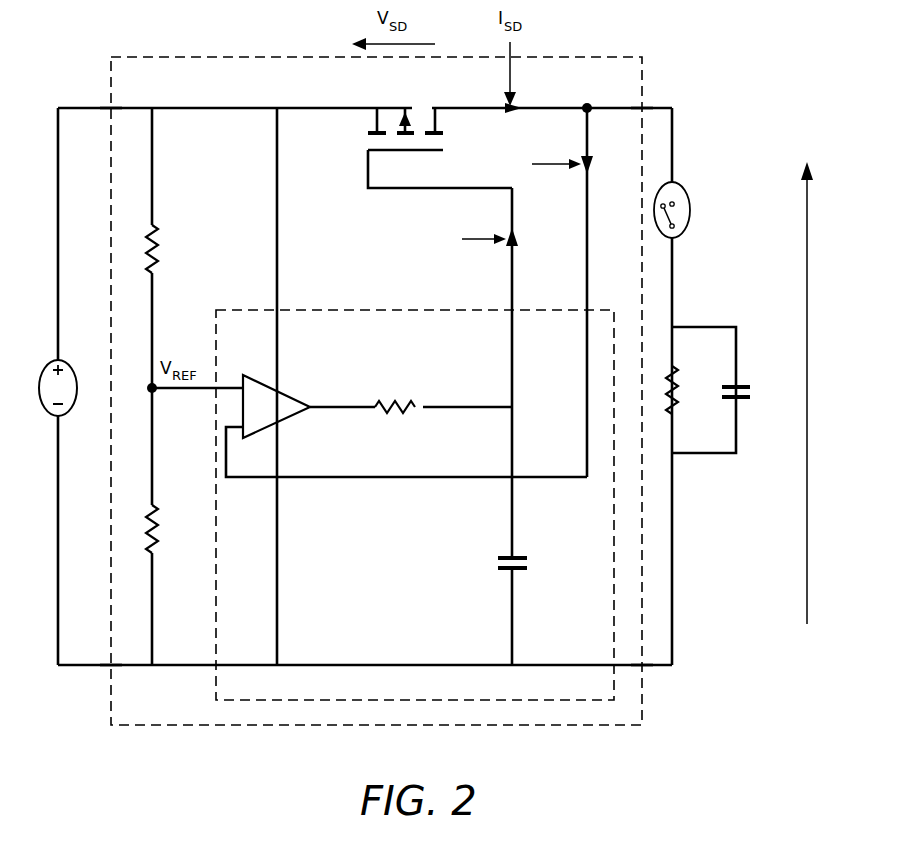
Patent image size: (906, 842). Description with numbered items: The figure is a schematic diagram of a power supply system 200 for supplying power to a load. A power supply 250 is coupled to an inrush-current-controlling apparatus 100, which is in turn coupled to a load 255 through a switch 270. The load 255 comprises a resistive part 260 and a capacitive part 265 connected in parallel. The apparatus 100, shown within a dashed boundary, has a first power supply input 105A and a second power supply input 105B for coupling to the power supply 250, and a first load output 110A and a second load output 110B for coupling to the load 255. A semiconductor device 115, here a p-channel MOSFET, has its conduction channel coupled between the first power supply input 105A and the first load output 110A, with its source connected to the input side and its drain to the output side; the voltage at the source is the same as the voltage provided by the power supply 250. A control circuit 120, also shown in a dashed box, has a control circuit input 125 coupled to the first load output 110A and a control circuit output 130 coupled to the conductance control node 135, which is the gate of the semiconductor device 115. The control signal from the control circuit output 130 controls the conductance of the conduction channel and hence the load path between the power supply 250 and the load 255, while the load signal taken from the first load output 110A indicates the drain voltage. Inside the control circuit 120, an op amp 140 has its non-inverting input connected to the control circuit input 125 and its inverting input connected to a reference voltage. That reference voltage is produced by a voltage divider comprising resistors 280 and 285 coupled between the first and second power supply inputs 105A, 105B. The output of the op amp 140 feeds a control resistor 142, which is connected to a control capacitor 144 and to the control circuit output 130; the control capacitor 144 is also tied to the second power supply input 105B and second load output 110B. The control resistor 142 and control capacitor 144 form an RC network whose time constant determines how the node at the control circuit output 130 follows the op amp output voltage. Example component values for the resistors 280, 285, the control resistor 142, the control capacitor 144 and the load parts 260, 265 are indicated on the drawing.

The apparatus 100 is at (126, 727).
The first power supply input 105A is at (110, 106).
The second power supply input 105B is at (110, 668).
The first load output 110A is at (642, 106).
The second load output 110B is at (643, 668).
The semiconductor device 115 is at (342, 97).
The control circuit 120 is at (428, 700).
The control circuit input 125 is at (586, 308).
The control circuit output 130 is at (511, 308).
The conductance control node 135 is at (340, 160).
The op amp 140 is at (292, 398).
The control resistor 142 is at (397, 413).
The control capacitor 144 is at (527, 560).
The power supply system 200 is at (723, 432).
The power supply 250 is at (43, 366).
The load 255 is at (732, 433).
The resistive part 260 is at (674, 412).
The capacitive part 265 is at (740, 386).
The switch 270 is at (691, 210).
The resistor 280 is at (155, 234).
The resistor 285 is at (153, 546).